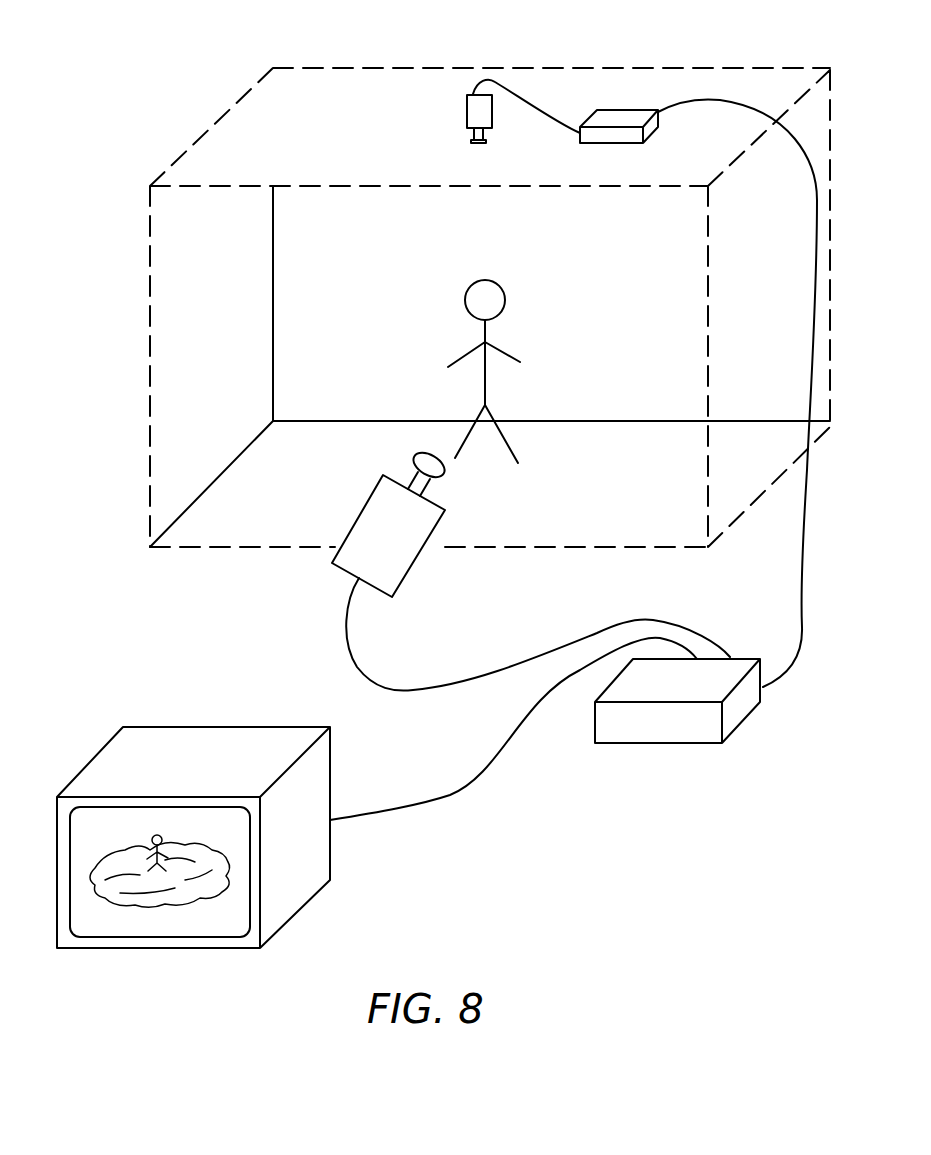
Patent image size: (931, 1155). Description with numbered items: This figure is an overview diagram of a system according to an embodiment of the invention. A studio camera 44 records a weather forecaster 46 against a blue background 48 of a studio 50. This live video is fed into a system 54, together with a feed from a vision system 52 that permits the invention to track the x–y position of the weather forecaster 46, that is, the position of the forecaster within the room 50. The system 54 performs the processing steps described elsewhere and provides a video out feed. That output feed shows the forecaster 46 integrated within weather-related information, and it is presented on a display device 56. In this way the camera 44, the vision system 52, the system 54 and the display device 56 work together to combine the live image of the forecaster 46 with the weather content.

The studio camera 44 is at (368, 500).
The weather forecaster 46 is at (505, 305).
The blue background 48 is at (290, 293).
The studio 50 is at (148, 227).
The vision system 52 is at (471, 93).
The system 54 is at (727, 733).
The display device 56 is at (330, 880).